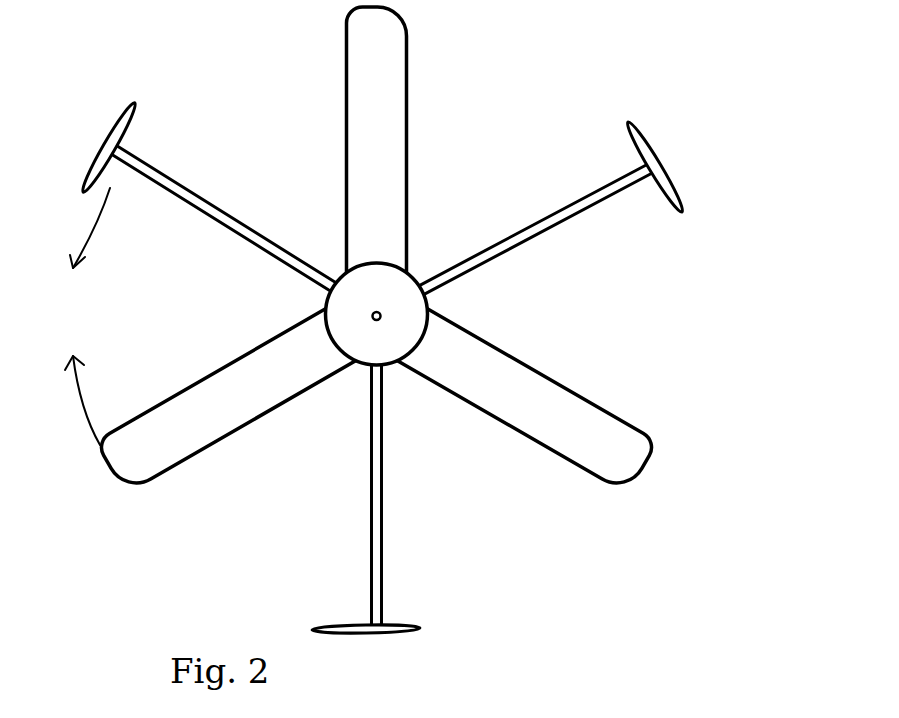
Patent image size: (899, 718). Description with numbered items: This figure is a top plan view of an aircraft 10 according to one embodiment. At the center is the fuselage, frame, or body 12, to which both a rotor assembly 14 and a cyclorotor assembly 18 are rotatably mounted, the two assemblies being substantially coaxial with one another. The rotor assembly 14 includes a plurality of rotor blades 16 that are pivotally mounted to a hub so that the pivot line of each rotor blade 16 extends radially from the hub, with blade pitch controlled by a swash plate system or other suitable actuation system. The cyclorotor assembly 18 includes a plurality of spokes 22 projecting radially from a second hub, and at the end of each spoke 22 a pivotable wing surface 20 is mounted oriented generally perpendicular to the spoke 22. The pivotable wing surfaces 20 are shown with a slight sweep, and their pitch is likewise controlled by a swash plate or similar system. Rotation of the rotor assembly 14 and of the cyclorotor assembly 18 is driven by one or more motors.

The aircraft 10 is at (525, 33).
The body 12 is at (415, 303).
The rotor assembly 14 is at (628, 397).
The rotor blade 16 is at (347, 112).
The cyclorotor assembly 18 is at (638, 228).
The pivotable wing surface 20 is at (92, 183).
The spoke 22 is at (170, 183).